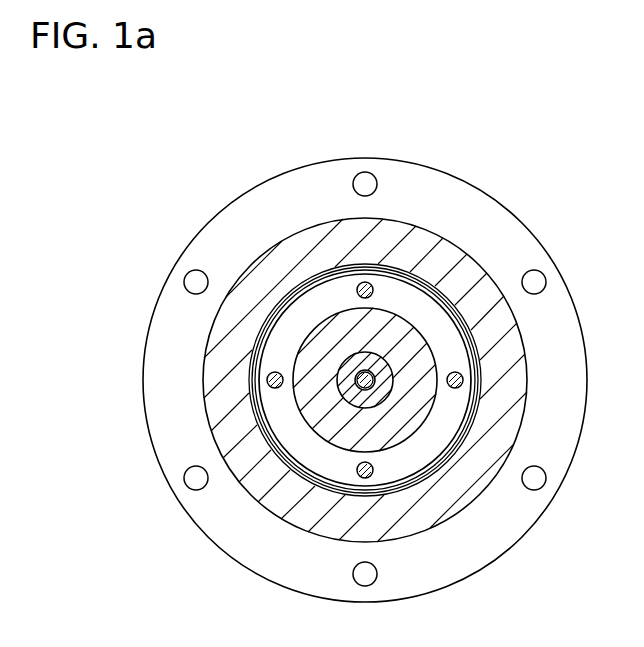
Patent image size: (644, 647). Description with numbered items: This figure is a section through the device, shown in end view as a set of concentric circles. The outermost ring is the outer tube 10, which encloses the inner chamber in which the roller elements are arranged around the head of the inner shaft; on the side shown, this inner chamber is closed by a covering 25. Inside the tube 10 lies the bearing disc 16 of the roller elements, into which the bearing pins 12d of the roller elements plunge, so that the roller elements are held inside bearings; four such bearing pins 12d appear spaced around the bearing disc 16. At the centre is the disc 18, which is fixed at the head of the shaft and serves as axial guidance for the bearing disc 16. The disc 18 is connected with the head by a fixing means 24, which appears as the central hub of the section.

The outer tube 10 is at (292, 268).
The bearing pin 12d is at (373, 470).
The bearing disc 16 is at (447, 422).
The disc 18 is at (402, 333).
The fixing means 24 is at (400, 348).
The covering 25 is at (267, 533).